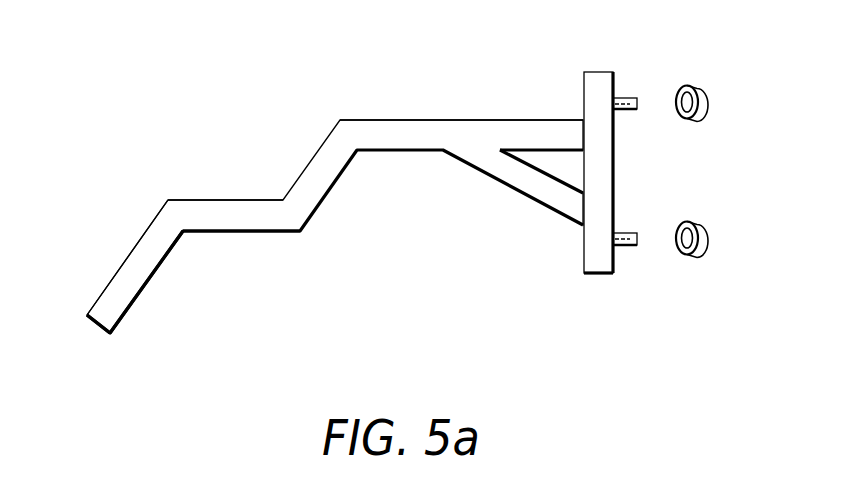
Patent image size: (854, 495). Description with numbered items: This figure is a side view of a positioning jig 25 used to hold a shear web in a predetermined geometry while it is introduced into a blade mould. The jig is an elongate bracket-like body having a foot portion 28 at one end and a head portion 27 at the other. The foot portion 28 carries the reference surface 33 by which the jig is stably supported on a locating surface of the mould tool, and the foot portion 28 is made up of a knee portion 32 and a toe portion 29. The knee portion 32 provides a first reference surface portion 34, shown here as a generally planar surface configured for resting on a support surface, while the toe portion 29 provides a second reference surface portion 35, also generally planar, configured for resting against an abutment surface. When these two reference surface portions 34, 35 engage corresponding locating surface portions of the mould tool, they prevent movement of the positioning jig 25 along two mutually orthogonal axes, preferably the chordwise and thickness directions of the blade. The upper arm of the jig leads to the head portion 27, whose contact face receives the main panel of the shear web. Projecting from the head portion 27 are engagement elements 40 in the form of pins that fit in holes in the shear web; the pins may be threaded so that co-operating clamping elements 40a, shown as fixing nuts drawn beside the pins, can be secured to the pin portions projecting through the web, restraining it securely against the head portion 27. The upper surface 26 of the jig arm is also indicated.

The positioning jig 25 is at (401, 204).
The upper mounting surface 26 is at (375, 120).
The head portion 27 is at (596, 72).
The foot portion 28 is at (322, 215).
The toe portion 29 is at (105, 285).
The knee portion 32 is at (230, 200).
The reference surface 33 is at (221, 312).
The first reference surface portion 34 is at (258, 233).
The second reference surface portion 35 is at (135, 307).
The engagement elements 40 is at (628, 98).
The clamping elements 40a is at (693, 222).